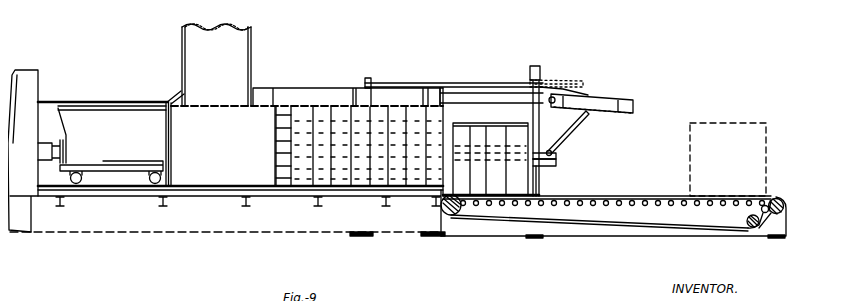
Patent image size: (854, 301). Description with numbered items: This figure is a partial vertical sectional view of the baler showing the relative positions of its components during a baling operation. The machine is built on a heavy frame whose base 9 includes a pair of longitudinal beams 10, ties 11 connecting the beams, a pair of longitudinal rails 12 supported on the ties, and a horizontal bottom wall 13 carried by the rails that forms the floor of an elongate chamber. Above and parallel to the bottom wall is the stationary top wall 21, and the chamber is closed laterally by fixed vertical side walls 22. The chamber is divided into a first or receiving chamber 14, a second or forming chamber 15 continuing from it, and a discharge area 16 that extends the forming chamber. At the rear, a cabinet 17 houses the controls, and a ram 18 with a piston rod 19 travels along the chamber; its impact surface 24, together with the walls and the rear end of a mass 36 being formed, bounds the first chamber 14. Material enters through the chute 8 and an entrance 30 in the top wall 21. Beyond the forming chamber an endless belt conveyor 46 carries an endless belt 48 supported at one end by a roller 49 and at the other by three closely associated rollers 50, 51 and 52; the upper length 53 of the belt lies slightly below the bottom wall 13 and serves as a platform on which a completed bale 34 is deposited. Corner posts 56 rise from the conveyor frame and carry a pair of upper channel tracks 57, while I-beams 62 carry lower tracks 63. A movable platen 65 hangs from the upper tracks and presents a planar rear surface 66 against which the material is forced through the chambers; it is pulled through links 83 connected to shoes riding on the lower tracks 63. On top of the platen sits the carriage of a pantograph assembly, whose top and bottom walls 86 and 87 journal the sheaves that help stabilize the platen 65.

The chute 8 is at (250, 38).
The base 9 is at (140, 226).
The longitudinal beams 10 is at (233, 225).
The ties 11 is at (153, 198).
The rails 12 is at (187, 197).
The bottom wall 13 is at (207, 178).
The first or receiving chamber 14 is at (196, 125).
The second or forming chamber 15 is at (303, 122).
The discharge area 16 is at (482, 108).
The cabinet 17 is at (27, 90).
The ram 18 is at (98, 122).
The piston rod 19 is at (55, 140).
The top wall 21 is at (297, 88).
The side walls 22 is at (233, 163).
The impact surface 24 is at (170, 150).
The entrance 30 is at (232, 100).
The mass or bale 34 is at (490, 128).
The mass being formed 36 is at (323, 115).
The endless belt conveyor 46 is at (585, 182).
The endless belt 48 is at (592, 218).
The roller 49 is at (457, 212).
The roller 50 is at (768, 193).
The roller 51 is at (767, 213).
The roller 52 is at (747, 215).
The upper length of the belt 53 is at (625, 192).
The corner posts 56 is at (538, 185).
The upper channel tracks 57 is at (468, 93).
The I-beams 62 is at (554, 160).
The lower tracks 63 is at (555, 151).
The platen 65 is at (622, 97).
The rear surface 66 is at (610, 110).
The links 83 is at (565, 125).
The top wall 86 is at (545, 70).
The bottom wall 87 is at (540, 82).